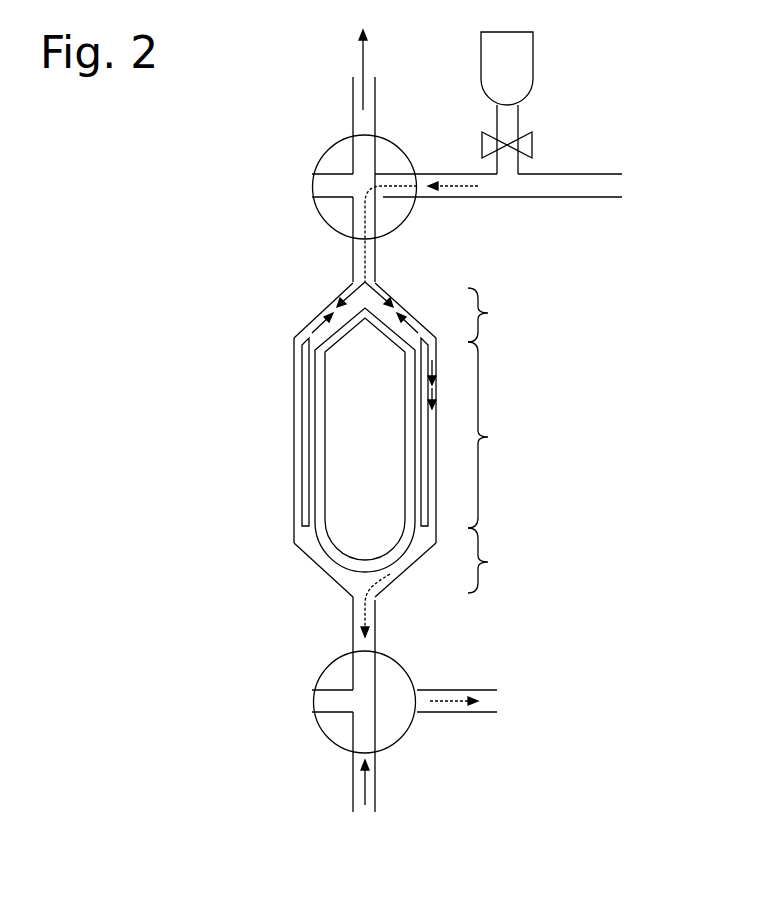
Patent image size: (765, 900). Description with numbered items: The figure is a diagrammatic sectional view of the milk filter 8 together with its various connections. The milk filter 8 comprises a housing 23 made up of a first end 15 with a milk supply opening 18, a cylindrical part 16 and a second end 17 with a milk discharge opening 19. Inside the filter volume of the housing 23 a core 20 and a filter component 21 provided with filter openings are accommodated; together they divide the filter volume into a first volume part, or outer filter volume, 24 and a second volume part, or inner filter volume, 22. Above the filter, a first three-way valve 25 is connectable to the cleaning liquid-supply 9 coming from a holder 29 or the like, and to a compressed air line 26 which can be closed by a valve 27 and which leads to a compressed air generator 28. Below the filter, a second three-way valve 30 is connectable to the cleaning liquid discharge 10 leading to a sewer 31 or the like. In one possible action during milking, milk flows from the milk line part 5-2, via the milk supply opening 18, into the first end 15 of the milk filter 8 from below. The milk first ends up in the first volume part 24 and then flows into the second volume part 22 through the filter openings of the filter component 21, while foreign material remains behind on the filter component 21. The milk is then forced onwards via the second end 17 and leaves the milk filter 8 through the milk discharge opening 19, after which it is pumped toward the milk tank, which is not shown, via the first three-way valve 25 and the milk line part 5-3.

The milk filter 8 is at (550, 360).
The cleaning liquid-supply 9 is at (472, 200).
The cleaning liquid discharge 10 is at (423, 700).
The first end 15 is at (497, 560).
The cylindrical part 16 is at (497, 435).
The second end 17 is at (497, 315).
The milk supply opening 18 is at (352, 597).
The milk discharge opening 19 is at (353, 287).
The core 20 is at (318, 430).
The filter component 21 is at (305, 468).
The second volume part 22 is at (310, 498).
The housing 23 is at (293, 380).
The first volume part 24 is at (305, 542).
The first three-way valve 25 is at (318, 163).
The compressed air line 26 is at (510, 163).
The valve 27 is at (512, 138).
The compressed air generator 28 is at (528, 65).
The holder 29 is at (593, 187).
The second three-way valve 30 is at (340, 652).
The sewer 31 is at (505, 700).
The milk line part 5-2 is at (375, 643).
The milk line part 5-3 is at (350, 110).